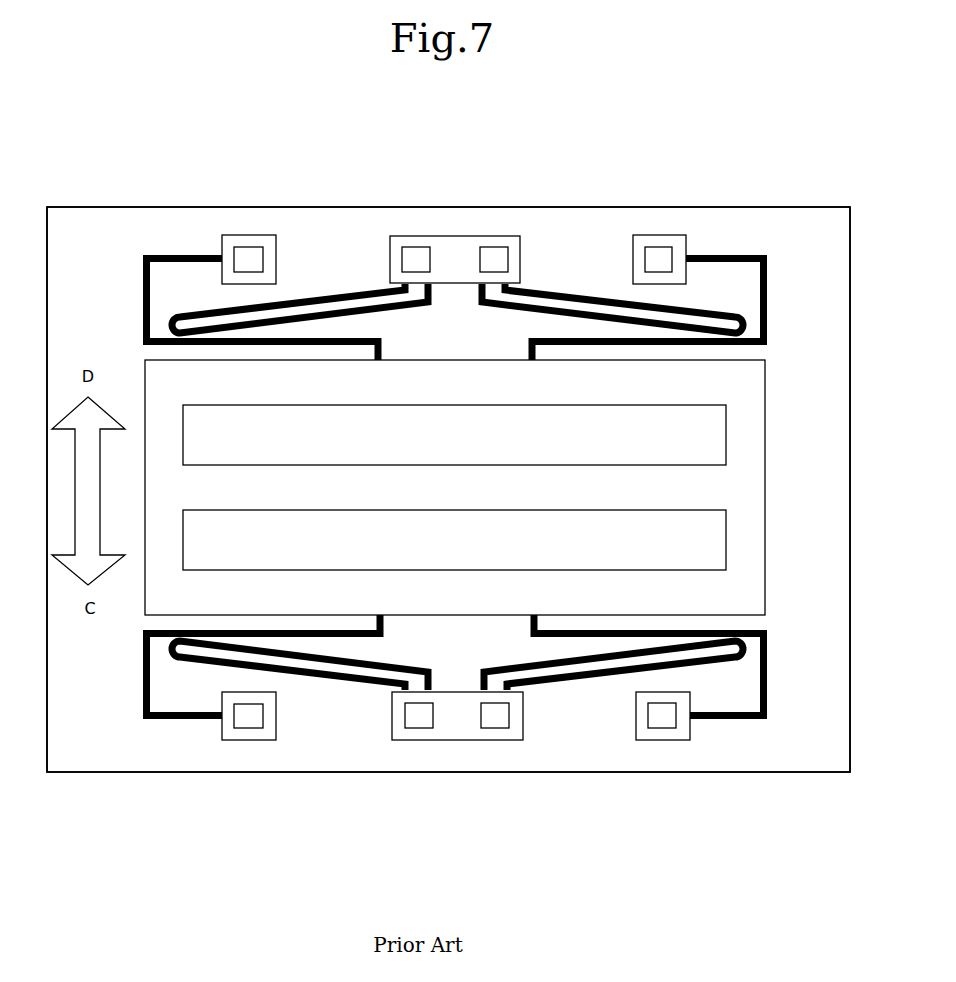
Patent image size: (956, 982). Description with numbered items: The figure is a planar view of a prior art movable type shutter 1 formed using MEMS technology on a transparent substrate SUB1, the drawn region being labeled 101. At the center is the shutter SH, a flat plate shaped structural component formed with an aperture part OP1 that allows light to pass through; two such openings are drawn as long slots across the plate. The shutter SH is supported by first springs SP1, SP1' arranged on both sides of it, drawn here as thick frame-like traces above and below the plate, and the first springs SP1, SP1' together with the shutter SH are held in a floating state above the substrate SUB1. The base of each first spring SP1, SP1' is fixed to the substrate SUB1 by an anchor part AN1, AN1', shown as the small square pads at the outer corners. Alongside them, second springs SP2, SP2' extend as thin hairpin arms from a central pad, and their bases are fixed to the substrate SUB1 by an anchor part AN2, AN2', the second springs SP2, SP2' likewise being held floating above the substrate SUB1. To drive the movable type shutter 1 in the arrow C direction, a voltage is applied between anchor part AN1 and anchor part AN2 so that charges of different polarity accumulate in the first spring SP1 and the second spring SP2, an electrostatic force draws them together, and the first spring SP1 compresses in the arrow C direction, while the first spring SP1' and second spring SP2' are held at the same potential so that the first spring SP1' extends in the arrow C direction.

The movable type shutter 1 is at (322, 221).
The transparent substrate SUB1 is at (172, 745).
The device region / pixel 101 is at (820, 773).
The shutter SH is at (765, 413).
The aperture part OP1 is at (685, 543).
The first spring SP1 is at (681, 659).
The first spring SP1' is at (674, 303).
The second spring SP2 is at (457, 725).
The second spring SP2' is at (457, 247).
The anchor part AN1 is at (684, 752).
The anchor part AN1' is at (638, 206).
The anchor part AN2 is at (457, 770).
The anchor part AN2' is at (455, 214).